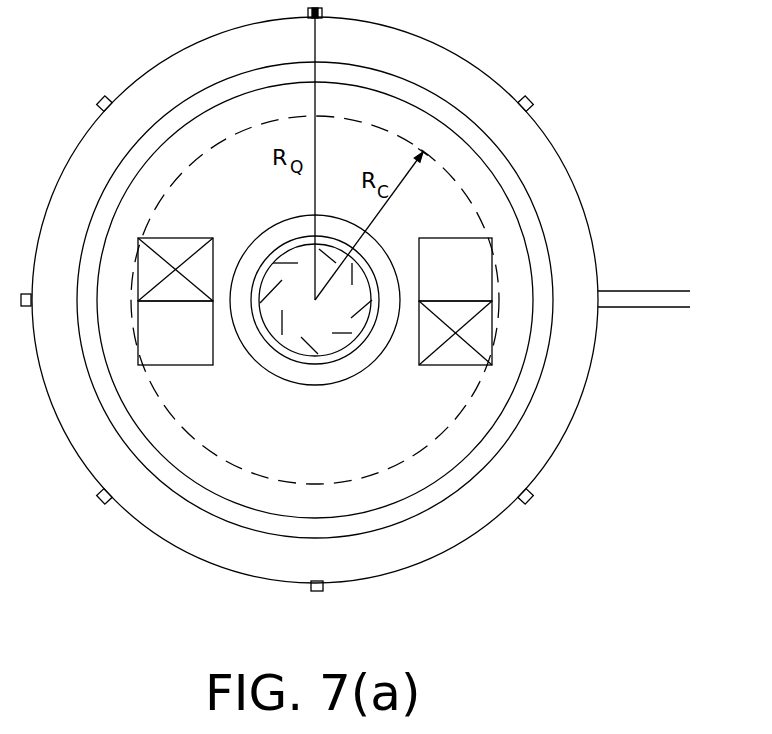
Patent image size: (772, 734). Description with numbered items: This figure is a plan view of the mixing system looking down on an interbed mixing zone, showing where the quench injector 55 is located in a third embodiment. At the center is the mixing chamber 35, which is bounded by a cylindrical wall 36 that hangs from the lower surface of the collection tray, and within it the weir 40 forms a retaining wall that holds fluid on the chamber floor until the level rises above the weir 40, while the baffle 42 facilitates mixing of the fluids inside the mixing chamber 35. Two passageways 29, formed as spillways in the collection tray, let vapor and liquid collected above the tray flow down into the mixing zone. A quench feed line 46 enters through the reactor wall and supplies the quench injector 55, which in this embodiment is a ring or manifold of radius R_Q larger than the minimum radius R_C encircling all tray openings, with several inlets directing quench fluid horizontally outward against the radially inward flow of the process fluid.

The passageway 29 is at (492, 238).
The mixing chamber 35 is at (268, 268).
The cylindrical wall 36 is at (512, 392).
The weir 40 is at (283, 357).
The baffle 42 is at (335, 383).
The quench feed line 46 is at (640, 290).
The quench injector 55 is at (260, 548).